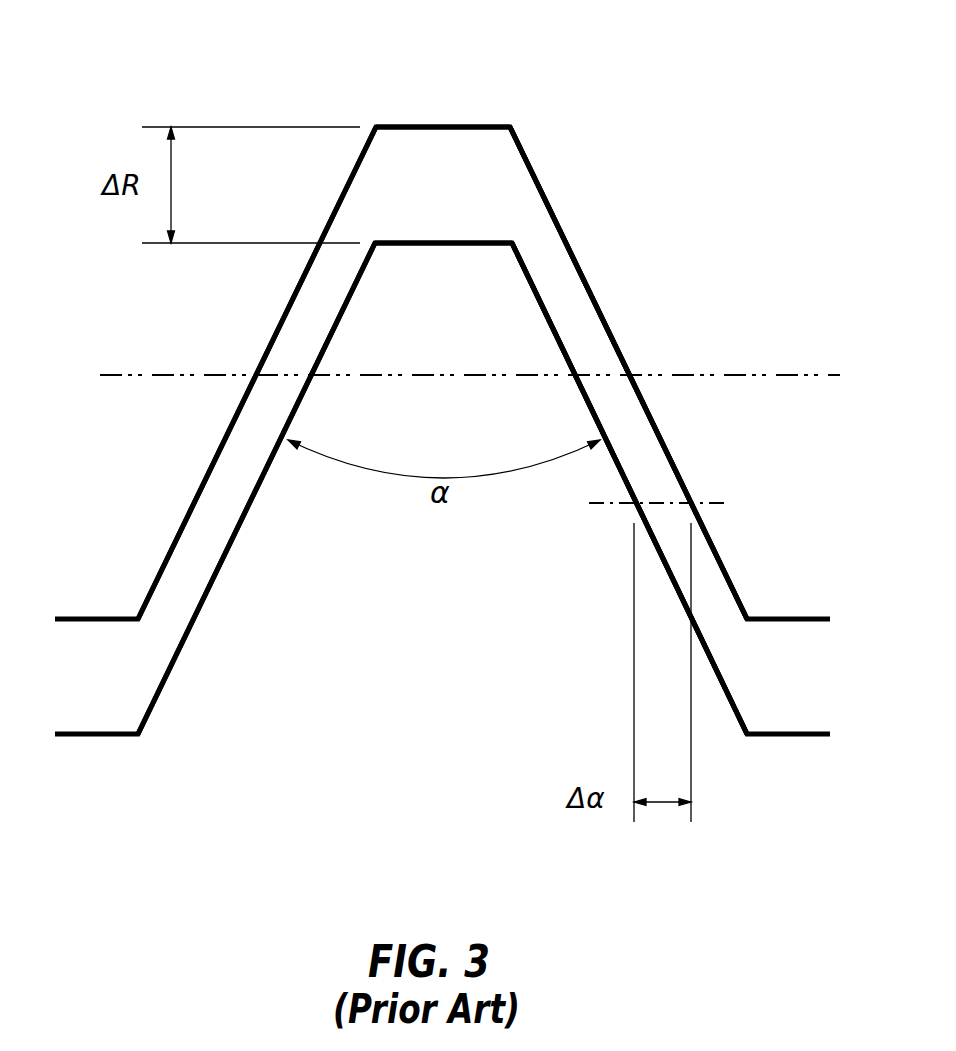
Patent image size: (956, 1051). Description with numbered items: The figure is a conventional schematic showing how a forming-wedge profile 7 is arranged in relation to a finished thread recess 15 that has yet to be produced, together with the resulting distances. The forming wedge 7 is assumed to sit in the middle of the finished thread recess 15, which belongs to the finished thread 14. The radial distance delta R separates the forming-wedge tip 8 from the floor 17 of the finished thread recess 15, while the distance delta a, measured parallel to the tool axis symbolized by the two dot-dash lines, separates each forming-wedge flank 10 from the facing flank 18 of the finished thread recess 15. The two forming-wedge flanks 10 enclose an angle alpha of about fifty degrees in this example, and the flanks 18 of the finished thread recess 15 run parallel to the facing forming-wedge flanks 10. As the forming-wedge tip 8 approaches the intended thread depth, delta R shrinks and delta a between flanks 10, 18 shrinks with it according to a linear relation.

The forming-wedge profile 7 is at (540, 301).
The forming-wedge tip 8 is at (477, 241).
The forming-wedge flank 10 is at (232, 548).
The finished thread 14 is at (535, 177).
The finished thread recess 15 is at (448, 205).
The floor 17 is at (447, 126).
The flank 18 is at (220, 450).